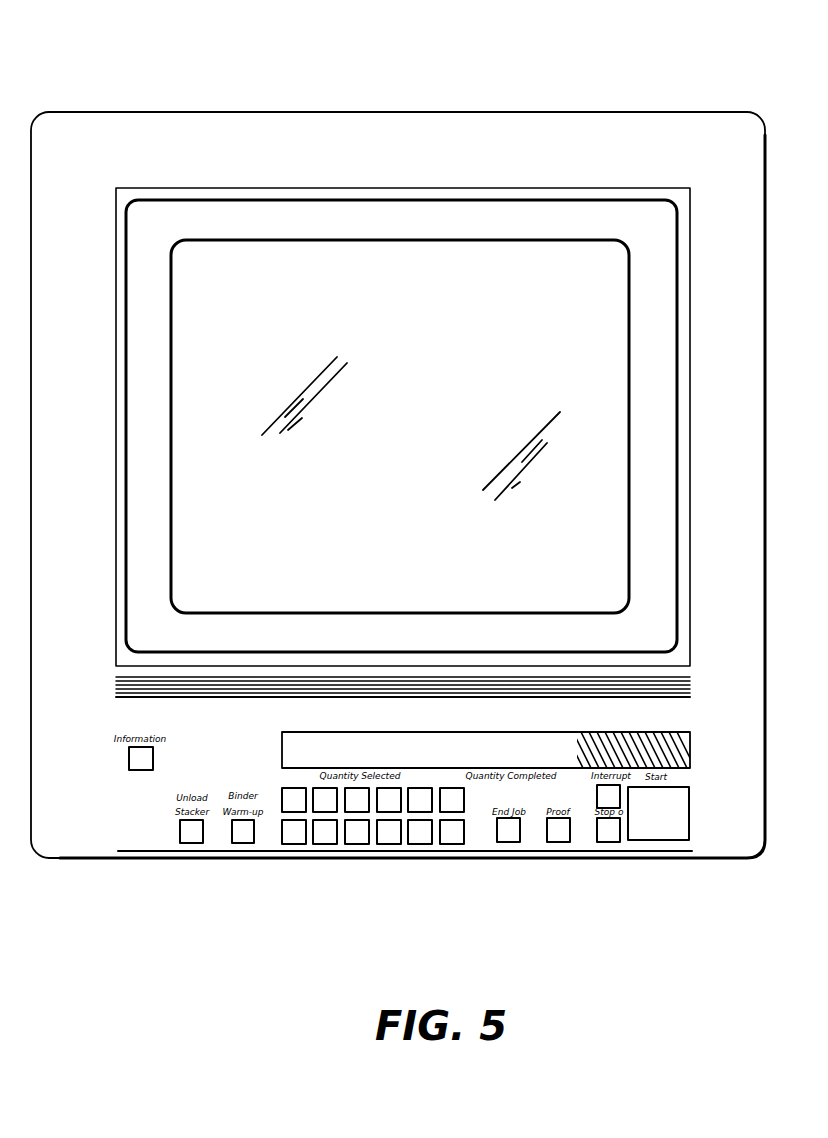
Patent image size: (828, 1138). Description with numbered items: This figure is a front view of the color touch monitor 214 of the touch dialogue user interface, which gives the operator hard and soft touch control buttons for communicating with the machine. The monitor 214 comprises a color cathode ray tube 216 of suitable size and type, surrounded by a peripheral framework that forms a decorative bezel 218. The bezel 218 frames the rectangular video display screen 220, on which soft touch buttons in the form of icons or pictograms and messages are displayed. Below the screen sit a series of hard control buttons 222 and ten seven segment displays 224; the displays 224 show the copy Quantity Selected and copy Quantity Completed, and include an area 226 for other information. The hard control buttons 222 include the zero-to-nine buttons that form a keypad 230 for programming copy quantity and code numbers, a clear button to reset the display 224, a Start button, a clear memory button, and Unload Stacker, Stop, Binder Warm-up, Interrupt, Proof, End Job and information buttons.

The color touch monitor 214 is at (421, 84).
The color cathode ray tube 216 is at (530, 251).
The decorative bezel 218 is at (742, 173).
The video display screen 220 is at (593, 252).
The hard control buttons 222 is at (310, 811).
The seven segment displays 224 is at (397, 732).
The area for other information 226 is at (688, 753).
The keypad 230 is at (468, 857).